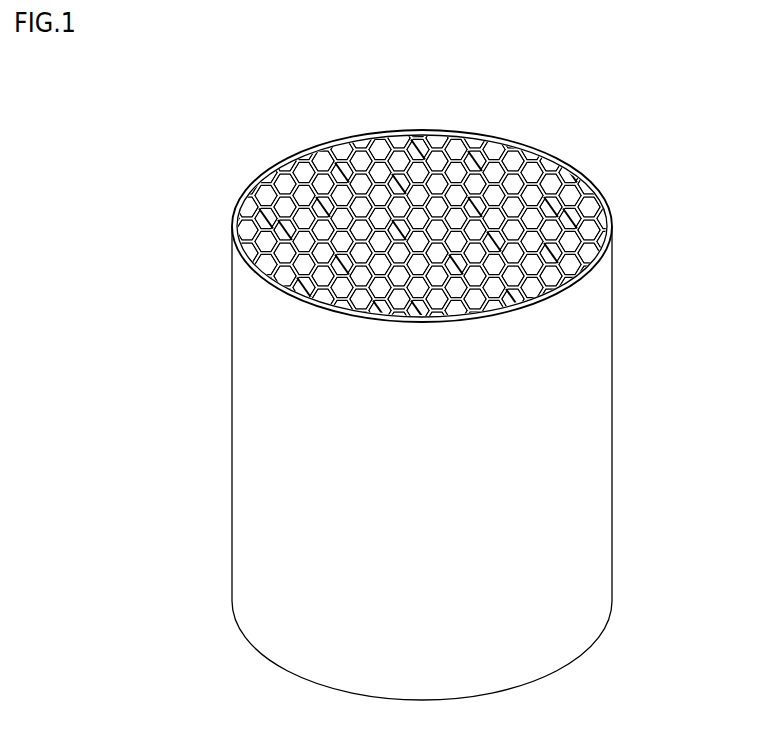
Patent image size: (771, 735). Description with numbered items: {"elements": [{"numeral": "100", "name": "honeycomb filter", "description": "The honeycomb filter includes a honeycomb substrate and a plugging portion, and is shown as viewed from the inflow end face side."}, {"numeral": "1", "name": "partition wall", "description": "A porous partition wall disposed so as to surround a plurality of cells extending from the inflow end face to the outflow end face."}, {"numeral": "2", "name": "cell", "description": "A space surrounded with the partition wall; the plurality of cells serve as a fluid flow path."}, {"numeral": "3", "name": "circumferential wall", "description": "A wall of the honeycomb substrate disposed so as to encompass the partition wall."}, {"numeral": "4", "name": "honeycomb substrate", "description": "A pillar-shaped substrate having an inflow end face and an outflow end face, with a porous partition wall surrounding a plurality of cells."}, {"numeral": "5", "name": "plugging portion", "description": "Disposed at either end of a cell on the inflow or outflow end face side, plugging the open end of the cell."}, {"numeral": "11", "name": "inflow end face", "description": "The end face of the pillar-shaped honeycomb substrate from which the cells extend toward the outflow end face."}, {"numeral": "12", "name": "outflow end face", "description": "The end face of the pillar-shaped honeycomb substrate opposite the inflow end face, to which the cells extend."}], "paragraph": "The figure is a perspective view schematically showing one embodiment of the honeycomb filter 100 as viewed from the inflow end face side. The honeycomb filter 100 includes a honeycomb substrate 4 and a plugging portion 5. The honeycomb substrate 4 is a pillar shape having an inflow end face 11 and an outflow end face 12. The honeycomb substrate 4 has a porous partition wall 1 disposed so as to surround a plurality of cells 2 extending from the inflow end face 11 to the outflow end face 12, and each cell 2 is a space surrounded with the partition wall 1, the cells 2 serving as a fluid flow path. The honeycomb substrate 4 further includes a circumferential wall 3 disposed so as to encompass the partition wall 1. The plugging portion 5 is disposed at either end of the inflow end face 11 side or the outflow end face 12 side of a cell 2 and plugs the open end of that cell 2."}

The honeycomb structure 100 is at (708, 70).
The partition walls 1 is at (556, 163).
The cells 2 is at (592, 190).
The circumferential wall 3 is at (585, 348).
The honeycomb structure body 4 is at (440, 157).
The plugging portion 5 is at (473, 187).
The first end face 11 is at (305, 146).
The second end face 12 is at (258, 657).